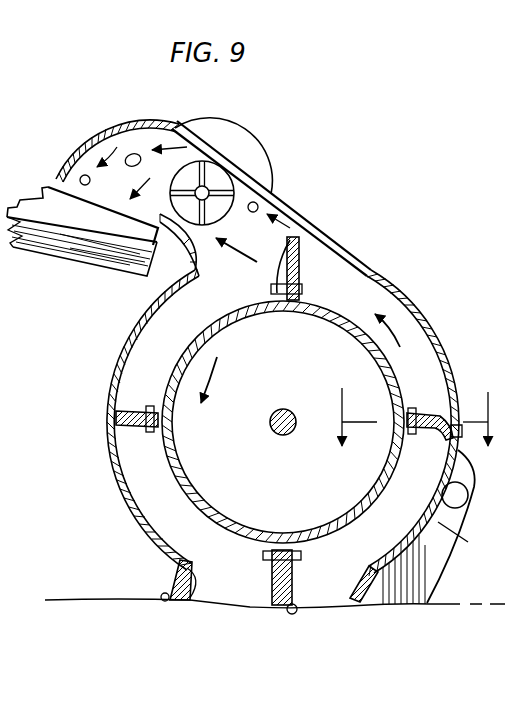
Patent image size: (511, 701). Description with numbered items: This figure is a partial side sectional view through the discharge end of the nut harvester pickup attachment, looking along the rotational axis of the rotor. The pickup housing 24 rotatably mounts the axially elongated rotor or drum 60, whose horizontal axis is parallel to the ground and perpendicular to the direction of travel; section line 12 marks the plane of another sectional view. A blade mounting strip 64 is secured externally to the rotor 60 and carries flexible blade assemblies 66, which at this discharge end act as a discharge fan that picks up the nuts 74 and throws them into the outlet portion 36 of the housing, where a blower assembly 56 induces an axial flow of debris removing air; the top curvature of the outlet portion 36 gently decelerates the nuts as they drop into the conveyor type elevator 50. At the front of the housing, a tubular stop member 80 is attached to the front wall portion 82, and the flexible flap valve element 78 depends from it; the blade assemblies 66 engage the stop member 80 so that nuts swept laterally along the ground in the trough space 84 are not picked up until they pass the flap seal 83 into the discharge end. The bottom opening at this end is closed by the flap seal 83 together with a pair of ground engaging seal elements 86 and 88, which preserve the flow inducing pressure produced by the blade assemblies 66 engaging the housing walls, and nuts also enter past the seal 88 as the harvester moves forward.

The section line 12 is at (409, 435).
The pickup housing 24 is at (456, 362).
The outlet portion 36 is at (247, 167).
The conveyor type elevator 50 is at (96, 251).
The blower assembly 56 is at (204, 86).
The rotor 60 is at (364, 292).
The blade mounting strip 64 is at (417, 408).
The flexible blade assembly 66 is at (293, 243).
The nuts 74 is at (290, 614).
The flap valve element 78 is at (436, 564).
The tubular stop member 80 is at (450, 502).
The front wall portion 82 is at (460, 427).
The flap seal 83 is at (407, 582).
The trough space 84 is at (466, 533).
The ground engaging seal element 86 is at (171, 590).
The ground engaging seal element 88 is at (370, 603).